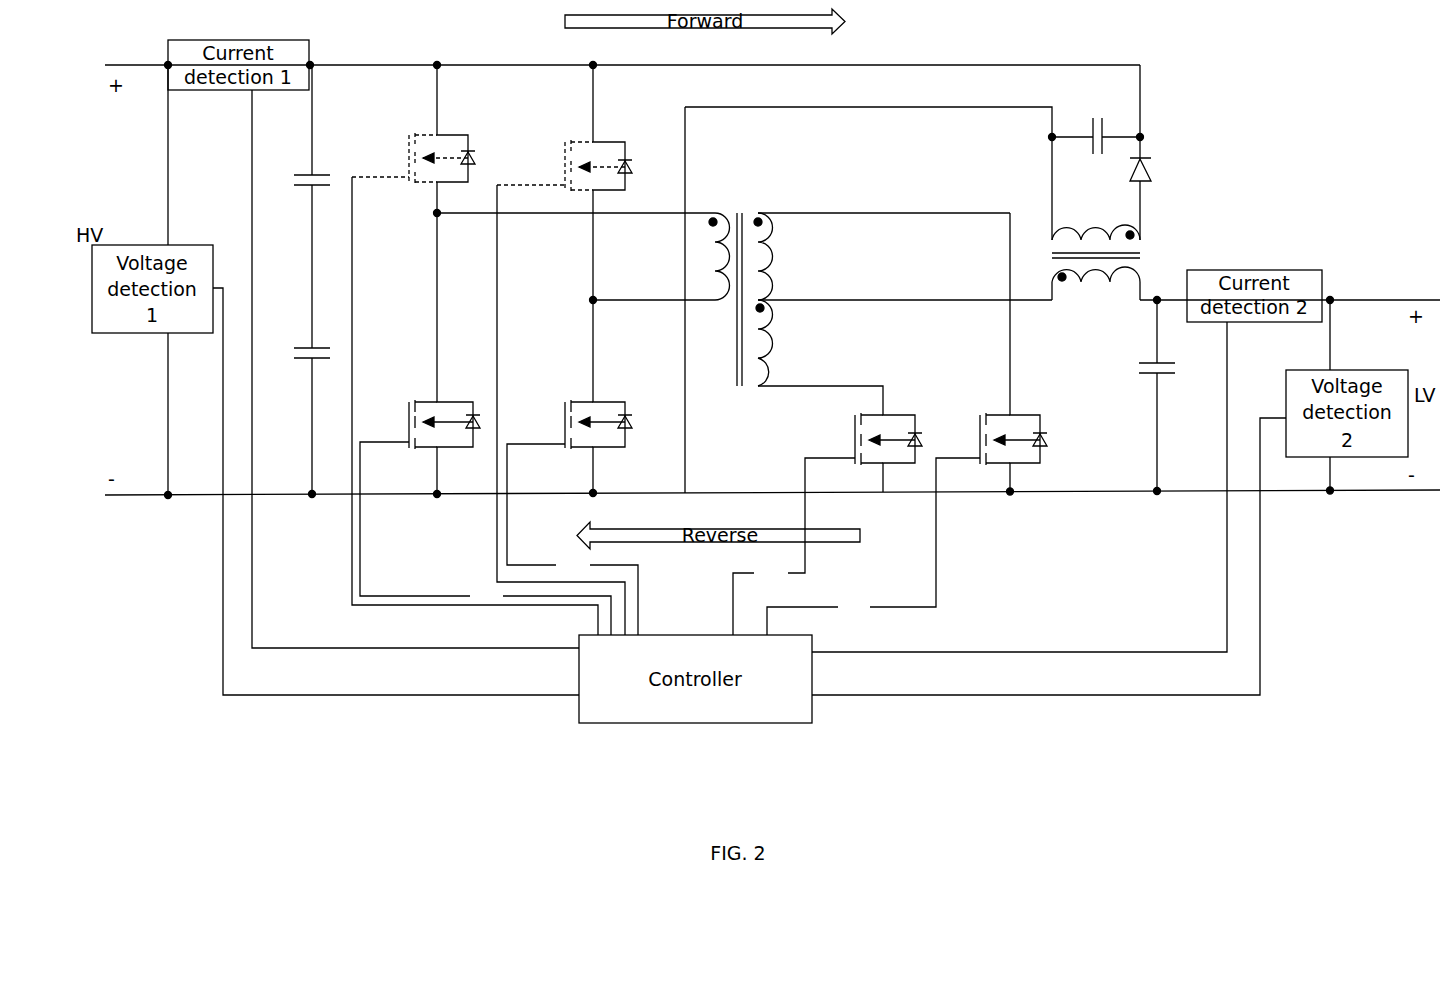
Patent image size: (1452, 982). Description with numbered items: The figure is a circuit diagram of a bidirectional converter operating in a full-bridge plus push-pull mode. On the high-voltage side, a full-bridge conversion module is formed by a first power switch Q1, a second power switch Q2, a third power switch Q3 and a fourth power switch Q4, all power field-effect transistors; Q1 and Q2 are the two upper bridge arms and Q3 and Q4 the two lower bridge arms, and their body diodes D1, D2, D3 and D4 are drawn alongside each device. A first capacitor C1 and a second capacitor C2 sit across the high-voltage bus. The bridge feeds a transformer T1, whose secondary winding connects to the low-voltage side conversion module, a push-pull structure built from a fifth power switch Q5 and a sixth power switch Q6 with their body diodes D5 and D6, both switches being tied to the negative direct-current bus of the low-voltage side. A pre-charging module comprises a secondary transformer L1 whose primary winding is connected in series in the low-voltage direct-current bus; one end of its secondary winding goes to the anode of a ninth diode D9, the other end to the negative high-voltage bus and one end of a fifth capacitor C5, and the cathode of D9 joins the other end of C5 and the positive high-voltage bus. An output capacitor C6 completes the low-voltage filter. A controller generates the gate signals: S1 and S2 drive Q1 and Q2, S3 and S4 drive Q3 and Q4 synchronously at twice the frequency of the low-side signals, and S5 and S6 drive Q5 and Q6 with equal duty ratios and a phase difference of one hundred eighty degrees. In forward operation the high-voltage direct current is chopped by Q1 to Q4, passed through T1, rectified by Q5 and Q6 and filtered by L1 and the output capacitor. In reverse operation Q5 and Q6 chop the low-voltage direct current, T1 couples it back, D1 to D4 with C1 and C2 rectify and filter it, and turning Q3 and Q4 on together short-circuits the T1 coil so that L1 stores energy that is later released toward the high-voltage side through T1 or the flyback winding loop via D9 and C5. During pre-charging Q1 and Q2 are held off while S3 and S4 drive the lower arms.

The first capacitor C1 is at (319, 162).
The second capacitor C2 is at (319, 377).
The fifth capacitor C5 is at (1096, 146).
The output capacitor C6 is at (1167, 395).
The first power switch Q1 is at (443, 139).
The second power switch Q2 is at (595, 182).
The third power switch Q3 is at (445, 353).
The fourth power switch Q4 is at (602, 396).
The fifth power switch Q5 is at (855, 439).
The sixth power switch Q6 is at (1029, 352).
The body diode of Q1 D1 is at (484, 158).
The body diode of Q2 D2 is at (640, 166).
The body diode of Q3 D3 is at (488, 423).
The body diode of Q4 D4 is at (640, 426).
The body diode of Q5 D5 is at (930, 440).
The body diode of Q6 D6 is at (1055, 440).
The ninth diode D9 is at (1156, 152).
The transformer T1 is at (744, 284).
The secondary transformer L1 is at (1081, 262).
The PWM control signal S1 is at (467, 406).
The PWM control signal S2 is at (554, 410).
The second PWM control signal S3 is at (485, 538).
The second PWM control signal S4 is at (572, 539).
The first PWM control signal S5 is at (794, 546).
The first PWM control signal S6 is at (873, 546).